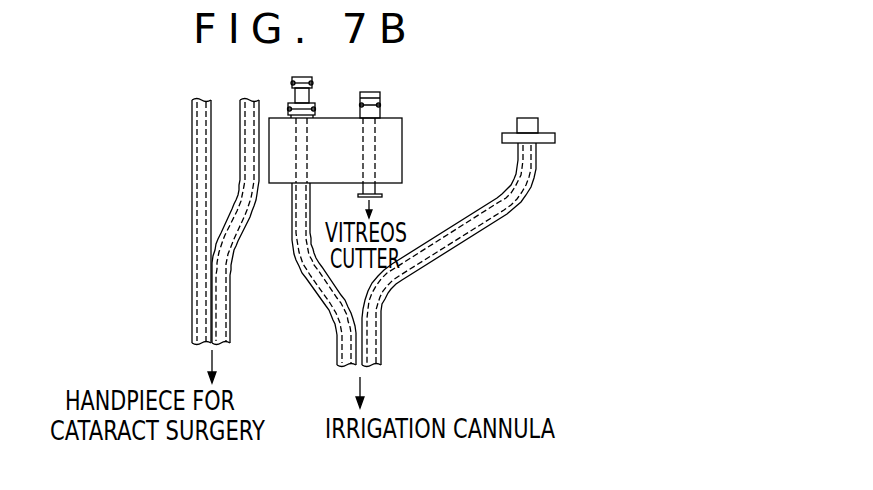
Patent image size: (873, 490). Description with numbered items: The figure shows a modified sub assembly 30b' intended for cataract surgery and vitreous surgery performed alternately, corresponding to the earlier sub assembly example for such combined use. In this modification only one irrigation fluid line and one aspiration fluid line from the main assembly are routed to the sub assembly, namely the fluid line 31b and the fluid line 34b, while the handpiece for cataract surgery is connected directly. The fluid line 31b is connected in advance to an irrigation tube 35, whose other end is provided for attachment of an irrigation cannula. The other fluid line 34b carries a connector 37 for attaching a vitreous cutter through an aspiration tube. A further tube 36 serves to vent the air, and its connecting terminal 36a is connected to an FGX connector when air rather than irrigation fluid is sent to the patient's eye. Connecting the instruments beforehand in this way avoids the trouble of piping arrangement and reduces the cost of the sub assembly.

The sub assembly 30b' is at (406, 178).
The fluid line 31b is at (300, 157).
The fluid line 34b is at (372, 152).
The irrigation tube 35 is at (342, 307).
The tube 36 is at (496, 242).
The connecting terminal 36a is at (527, 136).
The connector 37 is at (368, 188).